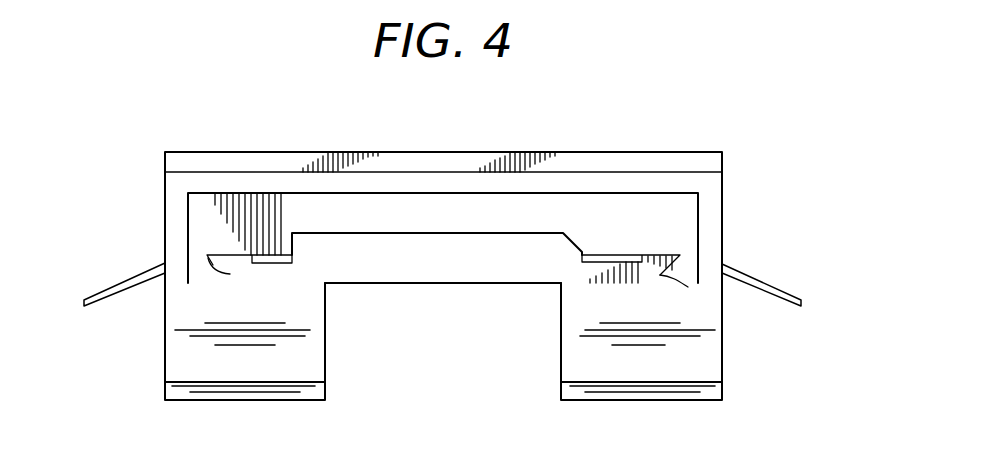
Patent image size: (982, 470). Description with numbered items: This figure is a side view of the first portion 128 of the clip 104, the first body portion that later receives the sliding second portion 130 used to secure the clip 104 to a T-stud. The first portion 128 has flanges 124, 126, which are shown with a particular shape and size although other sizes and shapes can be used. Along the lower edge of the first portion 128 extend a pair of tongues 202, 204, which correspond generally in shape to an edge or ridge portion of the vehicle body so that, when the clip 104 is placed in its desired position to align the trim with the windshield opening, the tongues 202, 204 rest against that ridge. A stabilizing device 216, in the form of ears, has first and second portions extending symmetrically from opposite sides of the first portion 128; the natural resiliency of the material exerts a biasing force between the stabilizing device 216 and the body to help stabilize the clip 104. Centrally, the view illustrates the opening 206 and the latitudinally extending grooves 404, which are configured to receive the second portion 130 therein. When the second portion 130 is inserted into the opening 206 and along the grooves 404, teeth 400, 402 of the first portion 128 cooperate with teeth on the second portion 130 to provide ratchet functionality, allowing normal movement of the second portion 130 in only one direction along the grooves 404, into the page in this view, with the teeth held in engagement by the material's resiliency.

The clip 104 is at (805, 52).
The flange 124 is at (712, 188).
The flange 126 is at (692, 151).
The first portion 128 is at (131, 176).
The second portion 130 is at (437, 273).
The tongue 202 is at (650, 394).
The tongue 204 is at (246, 394).
The opening 206 is at (498, 285).
The stabilizing device 216 is at (84, 302).
The teeth 400 is at (278, 264).
The teeth 402 is at (613, 263).
The latitudinally extending grooves 404 is at (230, 273).